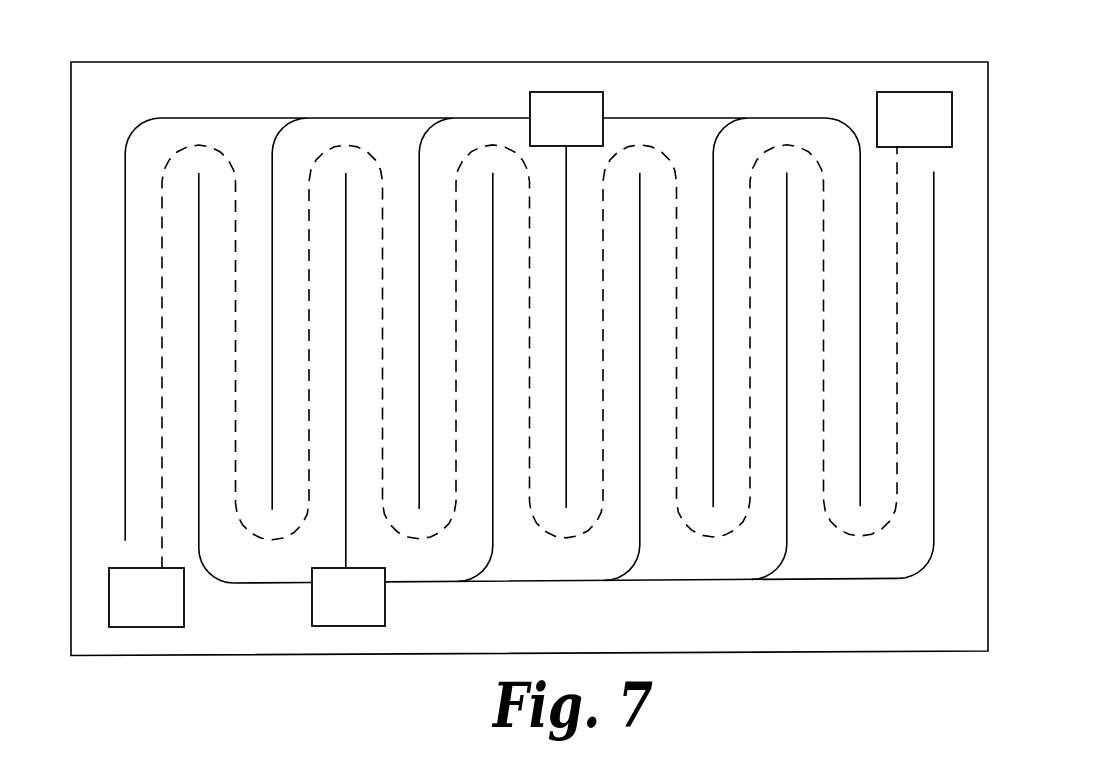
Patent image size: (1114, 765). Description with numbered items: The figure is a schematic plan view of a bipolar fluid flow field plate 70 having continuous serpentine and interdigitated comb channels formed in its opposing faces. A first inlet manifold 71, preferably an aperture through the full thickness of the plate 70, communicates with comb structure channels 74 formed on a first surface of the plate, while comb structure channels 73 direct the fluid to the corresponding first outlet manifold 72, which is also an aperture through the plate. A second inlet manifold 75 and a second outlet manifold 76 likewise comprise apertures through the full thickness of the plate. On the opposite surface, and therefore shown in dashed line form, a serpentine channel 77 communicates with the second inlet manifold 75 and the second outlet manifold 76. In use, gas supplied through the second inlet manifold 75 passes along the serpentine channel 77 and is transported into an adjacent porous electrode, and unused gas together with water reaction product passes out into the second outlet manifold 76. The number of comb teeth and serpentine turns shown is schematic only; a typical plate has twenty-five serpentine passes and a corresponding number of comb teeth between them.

The bipolar fluid flow field plate 70 is at (1023, 135).
The first inlet manifold 71 is at (563, 92).
The first outlet manifold 72 is at (345, 626).
The comb structure channels 73 is at (447, 580).
The comb structure channels 74 is at (483, 118).
The second inlet manifold 75 is at (913, 92).
The second outlet manifold 76 is at (143, 628).
The serpentine channel 77 is at (898, 309).